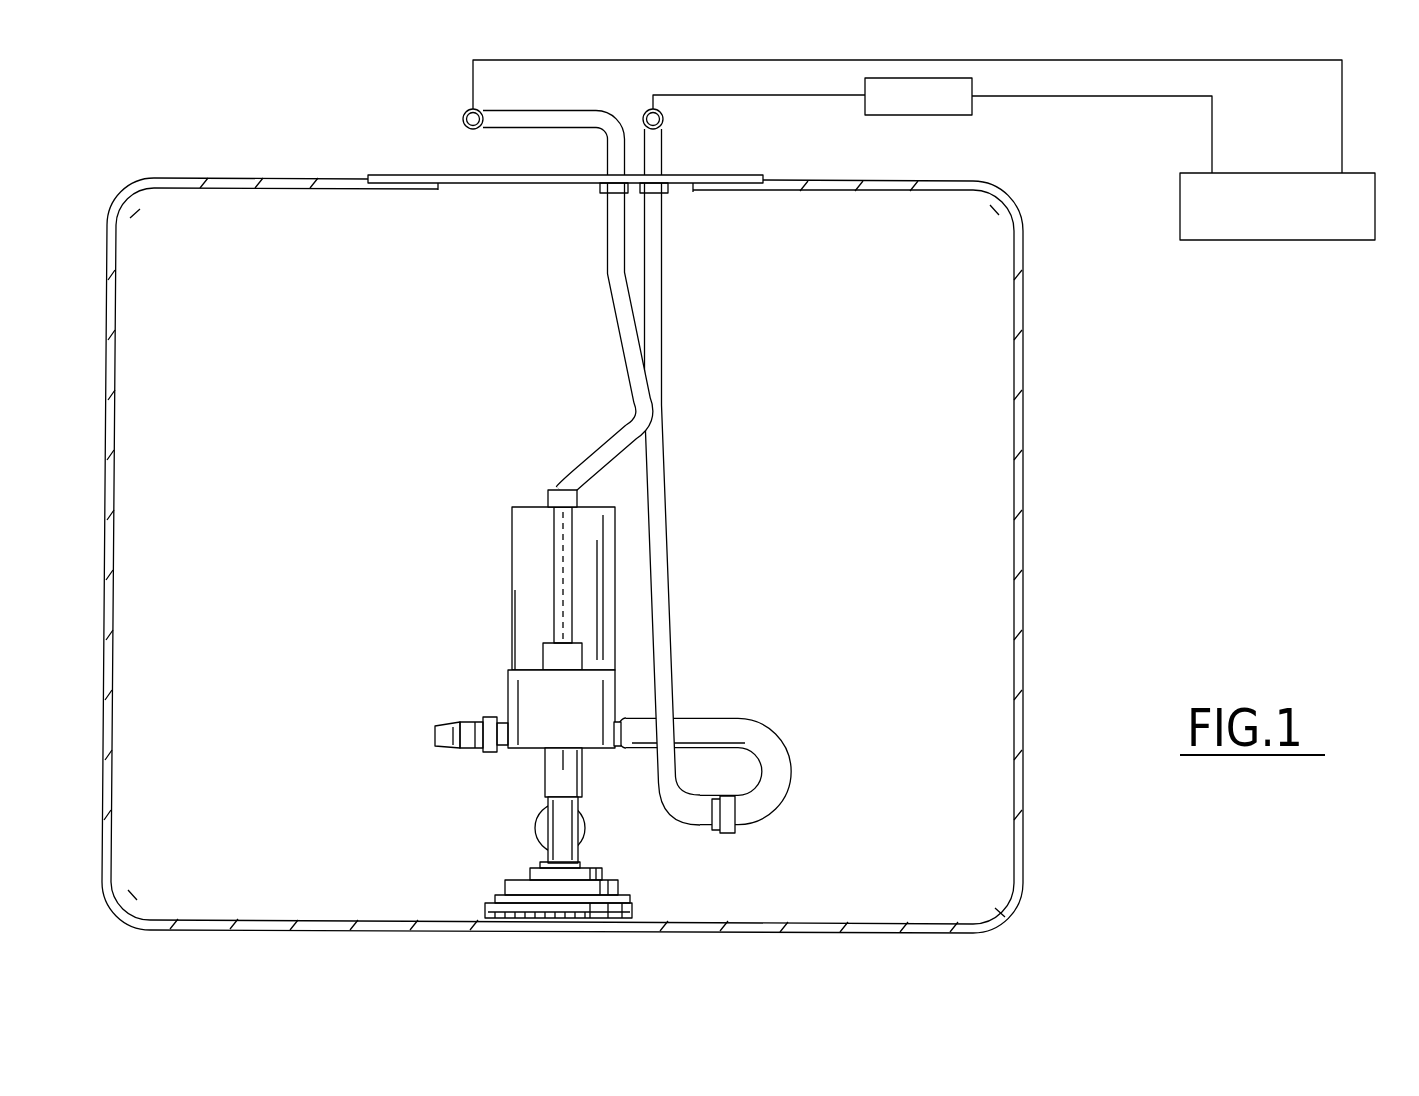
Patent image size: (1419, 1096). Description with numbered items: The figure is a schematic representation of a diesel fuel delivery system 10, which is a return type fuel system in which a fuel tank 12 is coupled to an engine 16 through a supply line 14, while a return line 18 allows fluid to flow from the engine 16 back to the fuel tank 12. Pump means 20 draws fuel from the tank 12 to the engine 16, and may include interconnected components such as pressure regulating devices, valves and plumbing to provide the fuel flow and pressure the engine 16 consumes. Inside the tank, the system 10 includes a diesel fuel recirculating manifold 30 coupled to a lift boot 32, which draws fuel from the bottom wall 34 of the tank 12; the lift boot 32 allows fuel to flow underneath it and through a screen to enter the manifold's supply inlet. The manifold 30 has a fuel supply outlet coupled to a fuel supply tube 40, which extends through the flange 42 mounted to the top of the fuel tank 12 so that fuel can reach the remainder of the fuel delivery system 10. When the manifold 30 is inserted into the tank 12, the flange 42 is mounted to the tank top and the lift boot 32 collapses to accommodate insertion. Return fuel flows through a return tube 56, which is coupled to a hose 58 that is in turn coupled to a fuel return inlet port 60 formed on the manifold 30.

The diesel fuel delivery system 10 is at (760, 496).
The fuel tank 12 is at (1025, 317).
The supply line 14 is at (1155, 98).
The engine 16 is at (1267, 240).
The return line 18 is at (1344, 116).
The pump means 20 is at (950, 115).
The diesel fuel recirculating manifold 30 is at (551, 701).
The lift boot 32 is at (510, 880).
The bottom wall 34 is at (298, 918).
The fuel supply tube 40 is at (658, 322).
The flange 42 is at (740, 176).
The return tube 56 is at (655, 457).
The hose 58 is at (710, 740).
The fuel return inlet port 60 is at (617, 722).